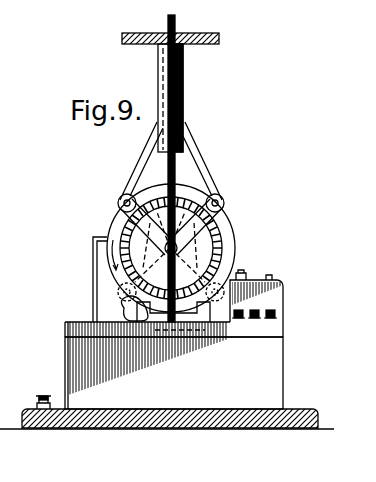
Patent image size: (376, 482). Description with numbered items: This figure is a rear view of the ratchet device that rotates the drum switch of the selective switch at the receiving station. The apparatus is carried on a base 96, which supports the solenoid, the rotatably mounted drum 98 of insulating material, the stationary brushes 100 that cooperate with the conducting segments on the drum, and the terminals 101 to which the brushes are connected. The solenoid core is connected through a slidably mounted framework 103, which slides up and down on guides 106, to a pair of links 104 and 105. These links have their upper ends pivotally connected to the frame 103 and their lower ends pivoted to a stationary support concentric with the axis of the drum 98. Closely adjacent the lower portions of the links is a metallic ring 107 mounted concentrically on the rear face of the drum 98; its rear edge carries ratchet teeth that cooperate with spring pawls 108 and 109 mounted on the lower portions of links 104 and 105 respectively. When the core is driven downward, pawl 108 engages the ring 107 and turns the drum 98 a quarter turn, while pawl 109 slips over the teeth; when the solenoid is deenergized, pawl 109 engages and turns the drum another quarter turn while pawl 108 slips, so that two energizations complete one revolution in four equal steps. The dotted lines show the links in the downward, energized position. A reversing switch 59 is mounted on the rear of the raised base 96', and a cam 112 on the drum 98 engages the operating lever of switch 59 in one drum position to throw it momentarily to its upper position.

The reversing switch 59 is at (270, 275).
The base 96 is at (171, 409).
The raised base 96' is at (188, 331).
The drum 98 is at (235, 224).
The stationary brushes 100 is at (96, 252).
The terminals 101 is at (37, 400).
The framework 103 is at (166, 81).
The link 104 is at (147, 158).
The link 105 is at (198, 158).
The guides 106 is at (166, 21).
The metallic ring 107 is at (224, 243).
The spring pawl 108 is at (118, 213).
The spring pawl 109 is at (210, 196).
The cam 112 is at (124, 306).